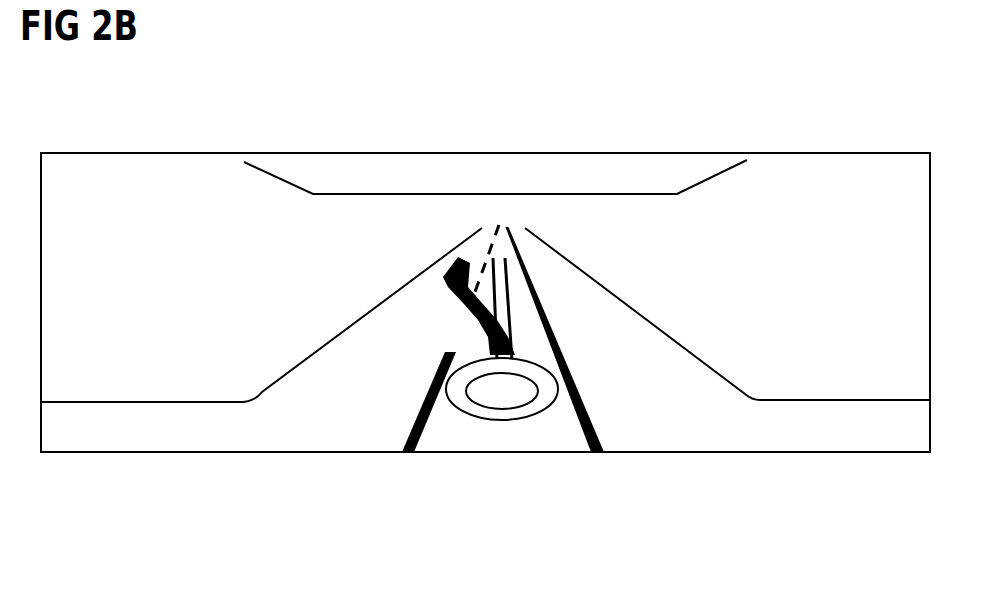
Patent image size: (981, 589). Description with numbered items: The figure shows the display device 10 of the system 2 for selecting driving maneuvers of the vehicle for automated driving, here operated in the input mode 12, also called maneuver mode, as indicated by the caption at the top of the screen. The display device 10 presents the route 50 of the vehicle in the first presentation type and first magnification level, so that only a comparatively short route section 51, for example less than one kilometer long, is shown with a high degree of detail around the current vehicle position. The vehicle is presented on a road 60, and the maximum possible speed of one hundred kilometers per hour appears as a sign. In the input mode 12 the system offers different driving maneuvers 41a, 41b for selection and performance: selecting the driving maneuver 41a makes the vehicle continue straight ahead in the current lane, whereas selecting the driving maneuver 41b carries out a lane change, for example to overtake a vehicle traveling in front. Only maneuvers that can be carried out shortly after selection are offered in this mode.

The display device 10 is at (795, 147).
The input mode 12 is at (667, 142).
The driving maneuver 41a is at (519, 292).
The driving maneuver 41b is at (451, 299).
The route 50 is at (727, 314).
The route section 51 is at (663, 302).
The road 60 is at (527, 280).
The system 2 is at (511, 410).